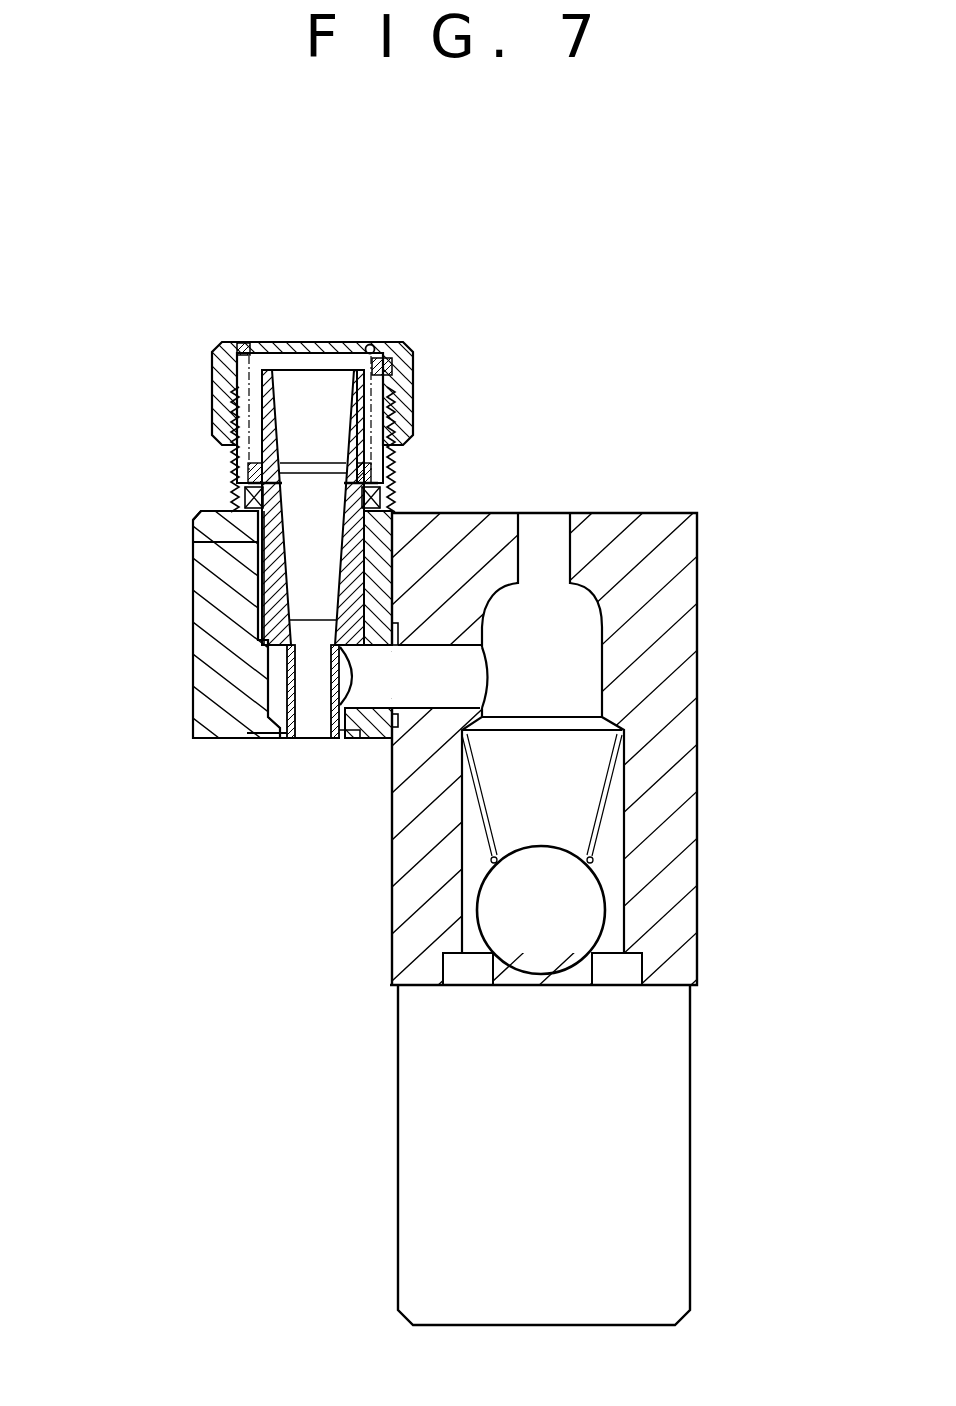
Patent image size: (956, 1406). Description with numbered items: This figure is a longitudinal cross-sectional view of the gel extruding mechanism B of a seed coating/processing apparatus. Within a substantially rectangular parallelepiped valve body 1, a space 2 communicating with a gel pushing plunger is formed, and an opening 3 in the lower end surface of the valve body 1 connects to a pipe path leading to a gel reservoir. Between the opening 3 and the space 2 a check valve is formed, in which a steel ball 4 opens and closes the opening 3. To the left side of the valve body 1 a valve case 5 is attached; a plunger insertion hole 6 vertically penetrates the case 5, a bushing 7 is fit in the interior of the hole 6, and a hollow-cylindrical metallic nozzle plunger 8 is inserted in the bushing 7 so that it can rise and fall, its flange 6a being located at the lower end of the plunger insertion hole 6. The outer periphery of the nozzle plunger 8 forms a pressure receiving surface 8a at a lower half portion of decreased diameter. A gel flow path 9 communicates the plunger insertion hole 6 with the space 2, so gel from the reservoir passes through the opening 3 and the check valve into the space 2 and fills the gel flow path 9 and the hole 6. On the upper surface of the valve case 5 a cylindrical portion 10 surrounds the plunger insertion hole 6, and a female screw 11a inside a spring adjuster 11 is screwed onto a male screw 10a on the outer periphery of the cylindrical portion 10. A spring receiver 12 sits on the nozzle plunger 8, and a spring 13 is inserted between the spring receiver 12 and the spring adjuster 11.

The valve body 1 is at (680, 553).
The space 2 is at (582, 655).
The opening 3 is at (577, 980).
The ball 4 is at (585, 908).
The valve case 5 is at (220, 577).
The plunger insertion hole 6 is at (420, 524).
The flange 6a is at (285, 722).
The bushing 7 is at (200, 541).
The nozzle plunger 8 is at (275, 617).
The pressure receiving surface 8a is at (358, 700).
The gel flow path 9 is at (457, 660).
The cylindrical portion 10 is at (232, 430).
The male screw 10a is at (237, 476).
The spring adjuster 11 is at (237, 343).
The female screw 11a is at (237, 360).
The spring receiver 12 is at (390, 394).
The spring 13 is at (370, 350).
The connector assembly B is at (729, 434).